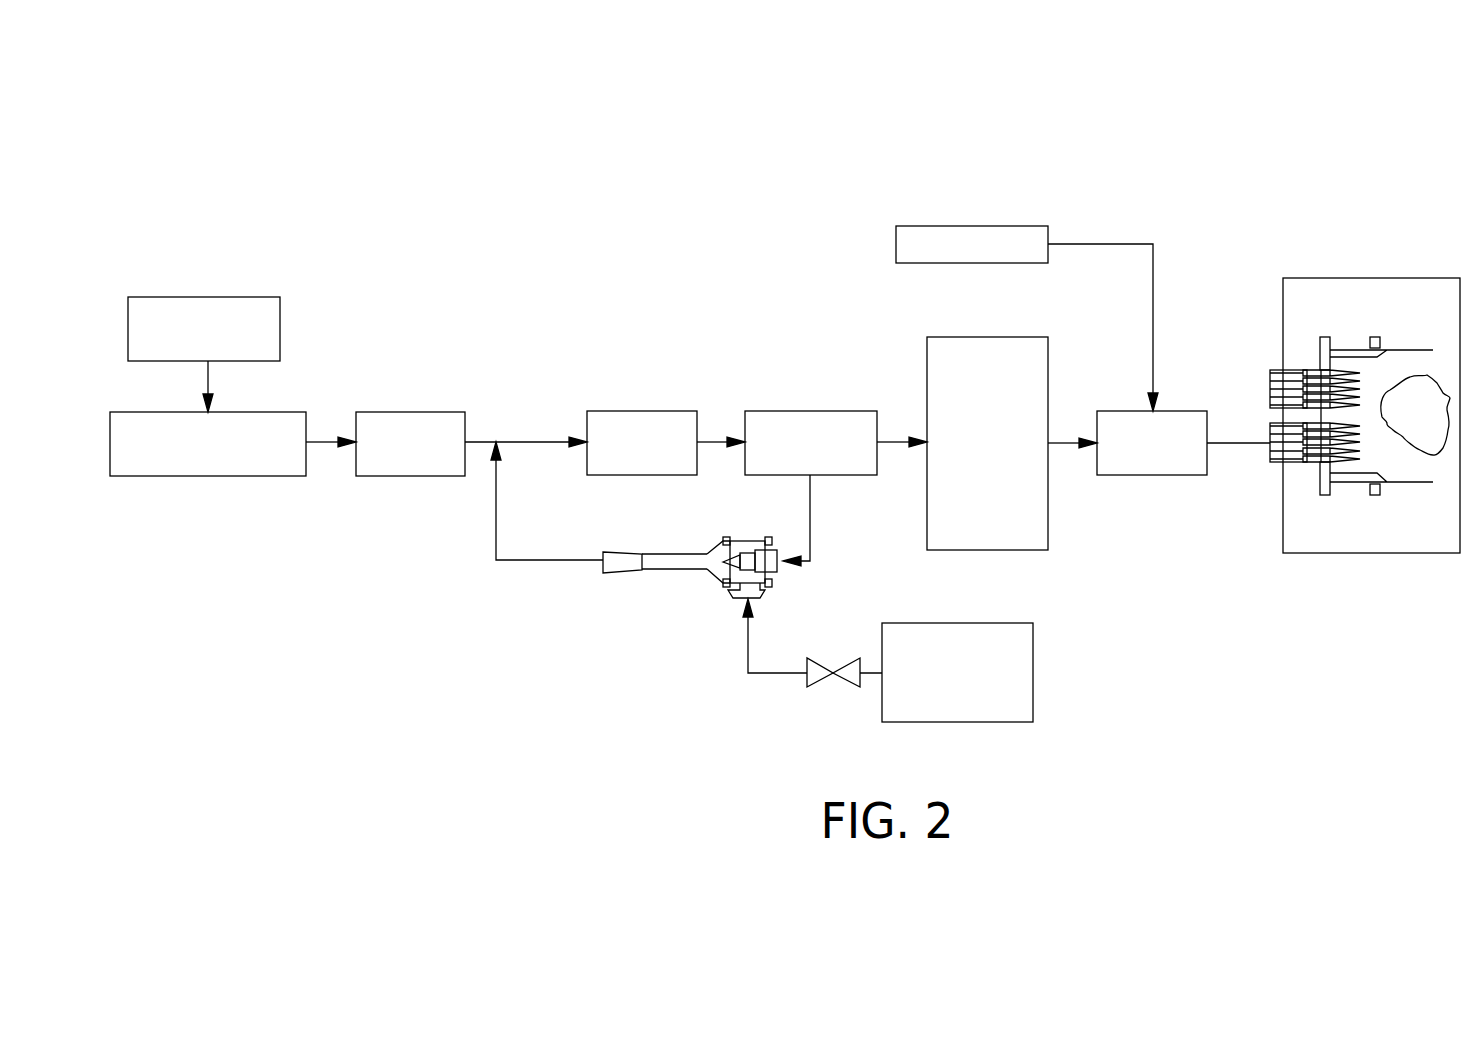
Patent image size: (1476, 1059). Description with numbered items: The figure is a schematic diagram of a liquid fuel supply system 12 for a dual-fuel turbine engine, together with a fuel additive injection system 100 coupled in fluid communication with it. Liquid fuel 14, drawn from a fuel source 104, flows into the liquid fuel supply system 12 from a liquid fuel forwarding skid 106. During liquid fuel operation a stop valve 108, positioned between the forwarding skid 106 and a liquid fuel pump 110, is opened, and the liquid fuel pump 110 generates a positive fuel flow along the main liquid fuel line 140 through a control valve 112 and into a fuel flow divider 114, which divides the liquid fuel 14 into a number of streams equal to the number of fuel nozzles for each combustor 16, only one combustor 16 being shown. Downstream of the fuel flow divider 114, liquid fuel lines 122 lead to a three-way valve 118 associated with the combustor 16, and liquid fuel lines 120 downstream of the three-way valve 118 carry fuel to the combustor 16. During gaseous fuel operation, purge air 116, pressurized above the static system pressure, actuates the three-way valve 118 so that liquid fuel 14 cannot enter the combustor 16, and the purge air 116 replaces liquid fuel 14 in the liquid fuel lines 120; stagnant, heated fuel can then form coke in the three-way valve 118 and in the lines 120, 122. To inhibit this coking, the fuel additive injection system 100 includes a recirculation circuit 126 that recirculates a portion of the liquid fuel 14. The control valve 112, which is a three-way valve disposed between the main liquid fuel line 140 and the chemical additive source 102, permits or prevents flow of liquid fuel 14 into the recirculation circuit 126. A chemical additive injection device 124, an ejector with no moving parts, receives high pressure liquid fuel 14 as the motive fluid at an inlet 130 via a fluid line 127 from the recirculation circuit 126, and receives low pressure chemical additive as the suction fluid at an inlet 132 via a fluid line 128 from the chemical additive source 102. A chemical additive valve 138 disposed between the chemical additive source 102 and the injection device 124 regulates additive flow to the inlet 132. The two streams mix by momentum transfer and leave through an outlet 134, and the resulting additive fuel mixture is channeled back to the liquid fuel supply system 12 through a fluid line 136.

The liquid fuel supply system 12 is at (641, 170).
The liquid fuel 14 is at (210, 372).
The combustor 16 is at (1340, 278).
The fuel additive injection system 100 is at (633, 700).
The chemical additive source 102 is at (1035, 668).
The fuel source 104 is at (222, 297).
The liquid fuel forwarding skid 106 is at (177, 476).
The stop valve 108 is at (408, 412).
The liquid fuel pump 110 is at (652, 411).
The control valve 112 is at (785, 411).
The fuel flow divider 114 is at (958, 337).
The purge air 116 is at (972, 226).
The three-way valve 118 is at (1160, 475).
The liquid fuel lines 120 is at (1238, 445).
The liquid fuel lines 122 is at (1060, 445).
The chemical additive injection device 124 is at (660, 573).
The recirculation circuit 126 is at (840, 526).
The fluid line 127 is at (823, 572).
The fluid line 128 is at (744, 647).
The inlet 130 is at (782, 547).
The inlet 132 is at (735, 597).
The outlet 134 is at (600, 563).
The fluid line 136 is at (494, 530).
The chemical additive valve 138 is at (823, 687).
The main liquid fuel line 140 is at (313, 437).